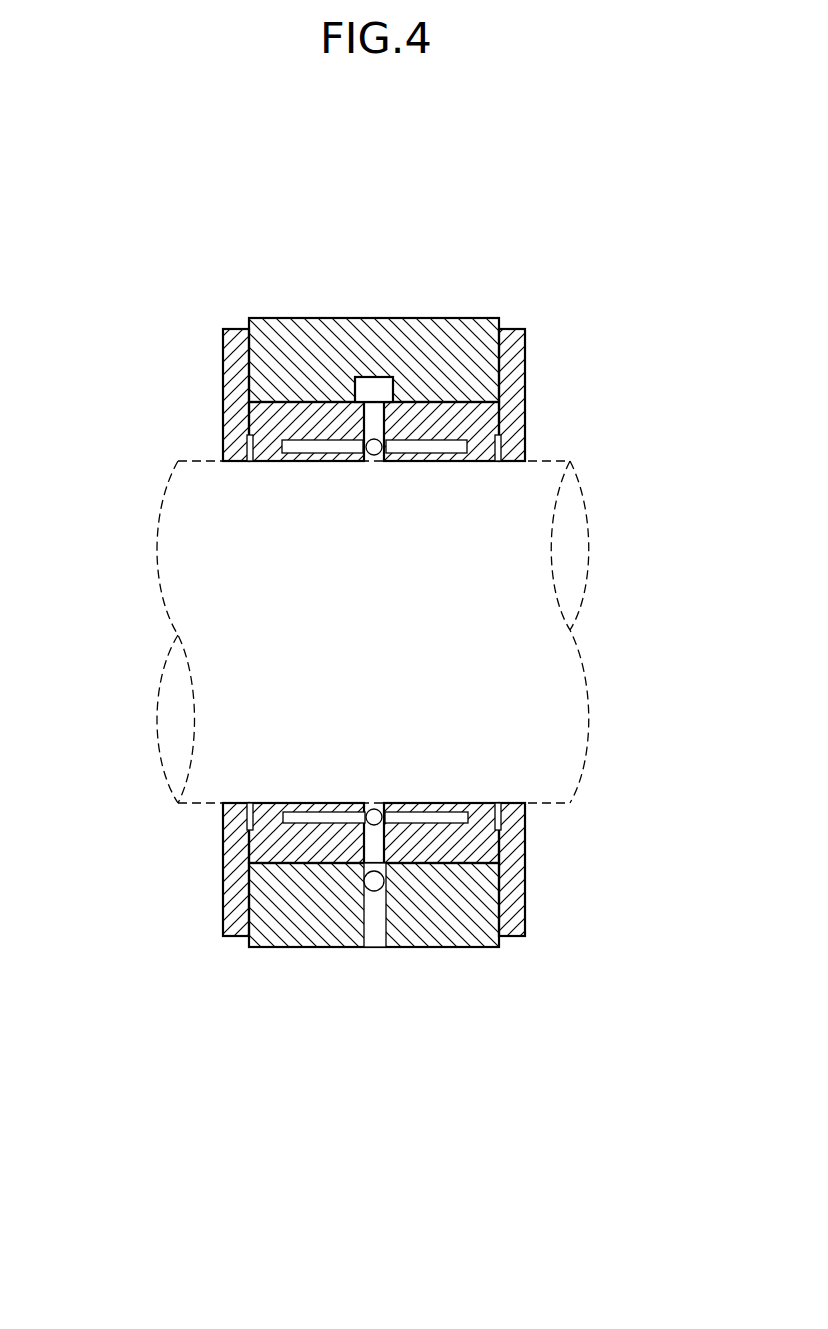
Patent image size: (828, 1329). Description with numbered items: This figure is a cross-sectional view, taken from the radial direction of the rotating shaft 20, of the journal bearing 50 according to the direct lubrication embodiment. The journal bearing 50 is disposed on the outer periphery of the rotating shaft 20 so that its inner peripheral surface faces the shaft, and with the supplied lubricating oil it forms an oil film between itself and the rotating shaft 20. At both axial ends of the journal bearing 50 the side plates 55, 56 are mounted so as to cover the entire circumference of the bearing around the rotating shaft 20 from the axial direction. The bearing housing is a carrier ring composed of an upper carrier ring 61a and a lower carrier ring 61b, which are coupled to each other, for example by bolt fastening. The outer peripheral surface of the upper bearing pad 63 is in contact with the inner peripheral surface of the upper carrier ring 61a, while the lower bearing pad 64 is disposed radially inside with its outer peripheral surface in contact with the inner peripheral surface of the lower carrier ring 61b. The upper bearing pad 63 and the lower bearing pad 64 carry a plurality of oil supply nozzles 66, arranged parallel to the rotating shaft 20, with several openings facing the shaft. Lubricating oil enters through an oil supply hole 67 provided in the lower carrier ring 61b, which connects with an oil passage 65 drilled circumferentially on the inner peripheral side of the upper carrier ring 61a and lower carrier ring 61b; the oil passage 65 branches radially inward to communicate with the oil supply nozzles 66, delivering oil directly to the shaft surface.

The rotating shaft 20 is at (207, 478).
The journal bearing 50 is at (372, 663).
The side plate 55 is at (235, 332).
The side plate 56 is at (517, 854).
The upper carrier ring 61a is at (347, 333).
The lower carrier ring 61b is at (297, 945).
The upper bearing pad 63 is at (502, 411).
The lower bearing pad 64 is at (255, 848).
The oil passage 65 is at (377, 387).
The oil supply nozzle 66 is at (325, 818).
The oil supply hole 67 is at (372, 947).